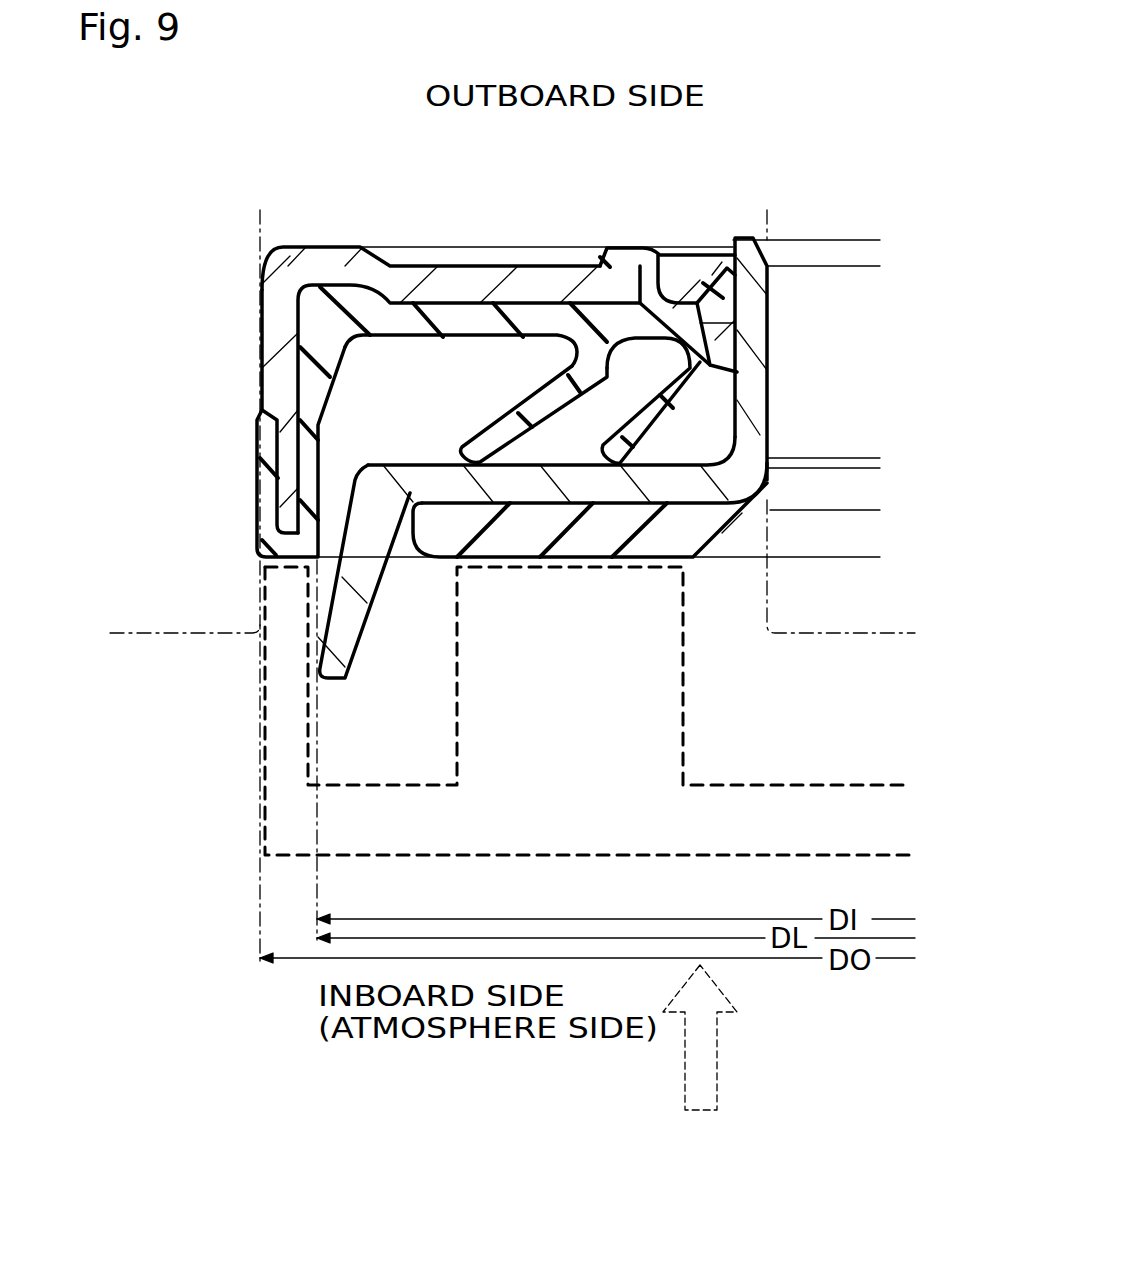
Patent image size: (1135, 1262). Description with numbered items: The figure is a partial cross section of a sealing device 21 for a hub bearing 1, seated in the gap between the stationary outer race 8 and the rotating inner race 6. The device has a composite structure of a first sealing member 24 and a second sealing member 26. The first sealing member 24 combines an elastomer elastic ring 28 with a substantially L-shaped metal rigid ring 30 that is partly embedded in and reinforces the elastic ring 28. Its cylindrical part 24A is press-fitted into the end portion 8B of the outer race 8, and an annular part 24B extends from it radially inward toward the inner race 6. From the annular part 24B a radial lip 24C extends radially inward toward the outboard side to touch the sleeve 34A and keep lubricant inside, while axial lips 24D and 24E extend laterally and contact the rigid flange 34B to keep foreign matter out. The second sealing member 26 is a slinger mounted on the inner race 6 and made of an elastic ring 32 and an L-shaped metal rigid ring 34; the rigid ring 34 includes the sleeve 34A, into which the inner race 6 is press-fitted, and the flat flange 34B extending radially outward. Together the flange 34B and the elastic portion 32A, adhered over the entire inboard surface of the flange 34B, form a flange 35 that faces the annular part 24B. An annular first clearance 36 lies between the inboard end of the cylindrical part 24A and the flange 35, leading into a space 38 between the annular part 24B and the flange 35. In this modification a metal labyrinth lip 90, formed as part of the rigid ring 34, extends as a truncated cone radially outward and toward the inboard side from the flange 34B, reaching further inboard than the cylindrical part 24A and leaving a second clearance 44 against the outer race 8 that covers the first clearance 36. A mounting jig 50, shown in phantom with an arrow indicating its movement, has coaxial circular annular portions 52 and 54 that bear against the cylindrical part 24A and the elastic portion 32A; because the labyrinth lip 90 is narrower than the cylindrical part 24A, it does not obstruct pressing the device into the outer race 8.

The hub bearing 1 is at (243, 716).
The inner race 6 is at (788, 633).
The outer race 8 is at (156, 636).
The end portion of the outer race 8B is at (126, 636).
The sealing device 21 is at (393, 690).
The first sealing member 24 is at (327, 213).
The cylindrical part 24A is at (278, 330).
The annular part 24B is at (413, 268).
The radial lip 24C is at (696, 292).
The axial lip 24D is at (547, 408).
The axial lip 24E is at (683, 405).
The second sealing member 26 is at (697, 601).
The elastic ring 28 is at (610, 256).
The rigid ring 30 is at (338, 260).
The elastic ring 32 is at (552, 545).
The elastic portion of the flange 32A is at (588, 540).
The rigid ring 34 is at (621, 425).
The sleeve 34A is at (762, 327).
The flange 34B is at (622, 488).
The flange 35 is at (515, 540).
The first clearance 36 is at (330, 465).
The space 38 is at (378, 367).
The second clearance 44 is at (284, 628).
The mounting jig 50 is at (367, 858).
The circular annular portion 52 is at (268, 750).
The circular annular portion 54 is at (684, 703).
The labyrinth lip 90 is at (360, 645).